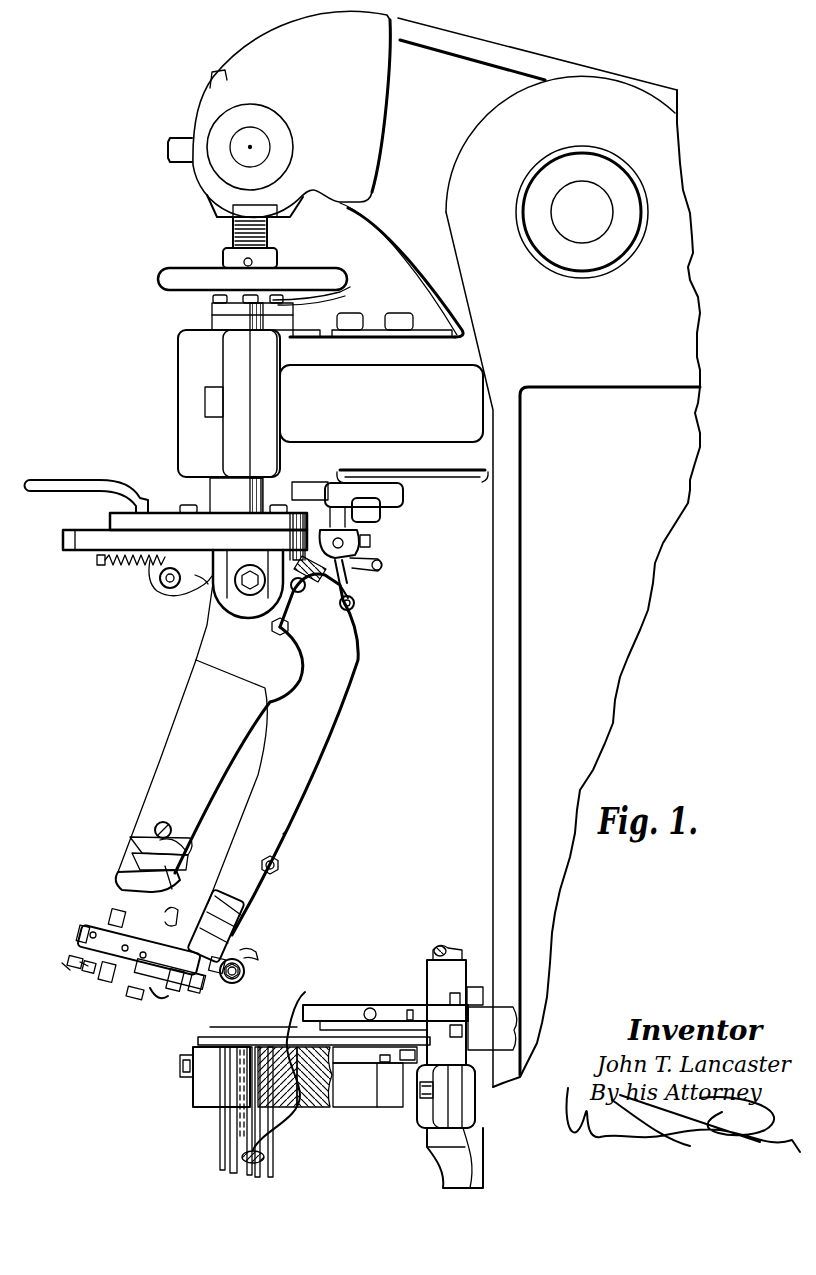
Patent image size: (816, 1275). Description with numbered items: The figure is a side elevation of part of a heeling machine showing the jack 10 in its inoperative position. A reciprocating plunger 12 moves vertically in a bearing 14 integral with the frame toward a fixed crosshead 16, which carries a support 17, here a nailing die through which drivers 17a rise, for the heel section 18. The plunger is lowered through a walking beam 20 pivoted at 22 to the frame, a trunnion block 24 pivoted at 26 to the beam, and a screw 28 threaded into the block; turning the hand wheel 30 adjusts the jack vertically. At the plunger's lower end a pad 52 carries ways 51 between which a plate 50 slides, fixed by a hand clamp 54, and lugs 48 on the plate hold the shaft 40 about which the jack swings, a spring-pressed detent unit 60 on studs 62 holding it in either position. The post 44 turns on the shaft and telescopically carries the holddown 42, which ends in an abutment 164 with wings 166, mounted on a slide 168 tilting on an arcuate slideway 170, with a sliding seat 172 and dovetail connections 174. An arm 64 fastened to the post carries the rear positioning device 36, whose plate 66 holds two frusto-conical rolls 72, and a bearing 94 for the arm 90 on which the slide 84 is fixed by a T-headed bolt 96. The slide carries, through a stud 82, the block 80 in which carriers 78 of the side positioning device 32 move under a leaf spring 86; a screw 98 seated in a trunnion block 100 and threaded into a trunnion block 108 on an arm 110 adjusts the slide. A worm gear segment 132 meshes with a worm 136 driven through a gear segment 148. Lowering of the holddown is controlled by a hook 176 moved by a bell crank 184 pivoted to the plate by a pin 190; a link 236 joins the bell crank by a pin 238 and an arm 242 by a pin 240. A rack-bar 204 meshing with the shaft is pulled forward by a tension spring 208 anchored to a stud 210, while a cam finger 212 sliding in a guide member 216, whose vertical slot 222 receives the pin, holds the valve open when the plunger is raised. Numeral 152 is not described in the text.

The jack 10 is at (148, 672).
The plunger 12 is at (213, 490).
The bearing 14 is at (188, 354).
The crosshead 16 is at (200, 1078).
The support 17 is at (288, 1070).
The drivers 17a is at (230, 1142).
The heel section 18 is at (262, 1030).
The walking beam 20 is at (262, 58).
The pivot 22 is at (555, 203).
The trunnion block 24 is at (203, 197).
The pivot 26 is at (258, 139).
The screw 28 is at (240, 235).
The hand wheel 30 is at (167, 281).
The positioning device 32 is at (81, 982).
The positioning device 36 is at (140, 1010).
The shaft 40 is at (252, 573).
The holddown 42 is at (178, 748).
The post 44 is at (212, 629).
The lugs 48 is at (250, 608).
The plate 50 is at (366, 512).
The ways 51 is at (66, 540).
The pad 52 is at (112, 520).
The hand clamp 54 is at (78, 488).
The spring-pressed detent unit 60 is at (208, 585).
The studs 62 is at (168, 583).
The arm 64 is at (344, 668).
The plate 66 is at (163, 992).
The frusto-conical rolls 72 is at (136, 996).
The carrier 78 is at (70, 957).
The block 80 is at (83, 930).
The stud 82 is at (117, 910).
The slide 84 is at (125, 933).
The leaf spring 86 is at (90, 972).
The arm 90 is at (213, 912).
The bearing 94 is at (230, 927).
The T-headed bolt 96 is at (172, 918).
The screw 98 is at (200, 990).
The trunnion block 100 is at (111, 971).
The trunnion block 108 is at (180, 990).
The arm 110 is at (220, 972).
The worm gear segment 132 is at (223, 941).
The worm 136 is at (245, 975).
The gear segment 148 is at (244, 958).
The block edge 152 is at (237, 913).
The abutment 164 is at (135, 853).
The wings 166 is at (120, 878).
The slide 168 is at (138, 840).
The arcuate slideway 170 is at (152, 830).
The sliding seat 172 is at (172, 889).
The dovetail connections 174 is at (195, 840).
The hook 176 is at (305, 591).
The bell crank 184 is at (348, 590).
The pin 190 is at (362, 541).
The rack-bar 204 is at (381, 564).
The tension spring 208 is at (134, 575).
The stud 210 is at (96, 562).
The cam finger 212 is at (373, 533).
The guide member 216 is at (386, 509).
The vertical slot 222 is at (314, 491).
The link 236 is at (283, 834).
The pin 238 is at (354, 604).
The pin 240 is at (274, 859).
The arm 242 is at (277, 868).